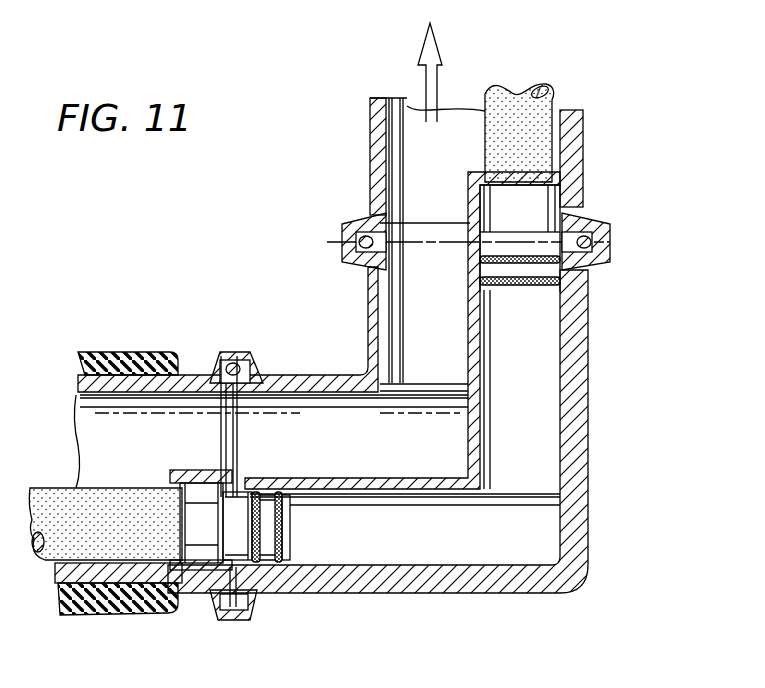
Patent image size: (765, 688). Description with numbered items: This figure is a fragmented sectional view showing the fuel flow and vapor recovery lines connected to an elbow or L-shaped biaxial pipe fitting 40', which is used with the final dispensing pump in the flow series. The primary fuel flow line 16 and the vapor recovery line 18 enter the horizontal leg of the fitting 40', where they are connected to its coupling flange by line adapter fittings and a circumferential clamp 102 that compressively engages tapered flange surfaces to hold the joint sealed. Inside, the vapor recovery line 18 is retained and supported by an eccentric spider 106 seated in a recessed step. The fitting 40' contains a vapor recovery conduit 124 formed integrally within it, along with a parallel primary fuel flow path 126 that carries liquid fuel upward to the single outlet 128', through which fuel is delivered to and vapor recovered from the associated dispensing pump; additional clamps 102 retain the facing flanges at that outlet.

The elbow-shaped biaxial pipe fitting 40' is at (403, 338).
The circumferential clamp 102 is at (327, 242).
The primary fuel flow line 16 is at (110, 360).
The vapor recovery line 18 is at (40, 488).
The eccentric spider 106 is at (192, 473).
The primary fuel flow path 126 is at (410, 323).
The vapor recovery conduit 124 is at (443, 545).
The single outlet 128' is at (443, 98).